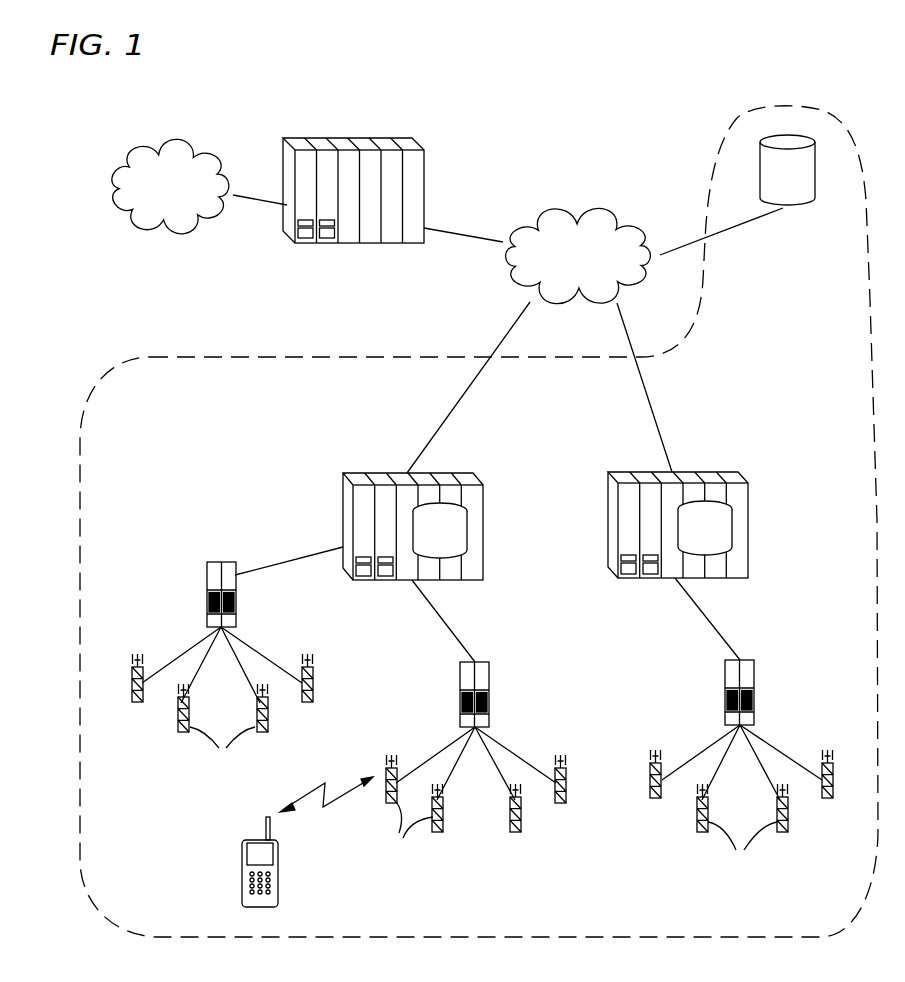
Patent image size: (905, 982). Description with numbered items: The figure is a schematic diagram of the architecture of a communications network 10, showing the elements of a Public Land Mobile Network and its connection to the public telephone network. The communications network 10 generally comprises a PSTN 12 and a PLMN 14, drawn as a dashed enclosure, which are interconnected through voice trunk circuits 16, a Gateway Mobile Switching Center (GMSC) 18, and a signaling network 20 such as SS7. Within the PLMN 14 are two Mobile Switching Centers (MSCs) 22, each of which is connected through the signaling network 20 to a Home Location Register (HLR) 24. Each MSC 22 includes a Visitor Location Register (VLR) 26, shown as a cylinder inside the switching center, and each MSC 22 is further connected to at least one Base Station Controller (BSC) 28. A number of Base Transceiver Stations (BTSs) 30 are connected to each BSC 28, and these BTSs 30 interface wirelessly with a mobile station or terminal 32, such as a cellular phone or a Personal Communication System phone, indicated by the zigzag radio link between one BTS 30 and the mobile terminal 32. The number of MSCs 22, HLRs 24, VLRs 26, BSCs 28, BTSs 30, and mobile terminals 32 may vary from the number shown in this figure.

The communications network 10 is at (128, 128).
The PSTN 12 is at (122, 170).
The PLMN 14 is at (140, 354).
The voice trunk circuits 16 is at (258, 198).
The Gateway Mobile Switching Center 18 is at (317, 142).
The signaling network 20 is at (570, 212).
The Mobile Switching Center 22 is at (380, 480).
The Home Location Register 24 is at (815, 195).
The Visitor Location Register 26 is at (467, 533).
The Base Station Controller 28 is at (207, 575).
The Base Transceiver Station 30 is at (457, 754).
The mobile station 32 is at (278, 863).